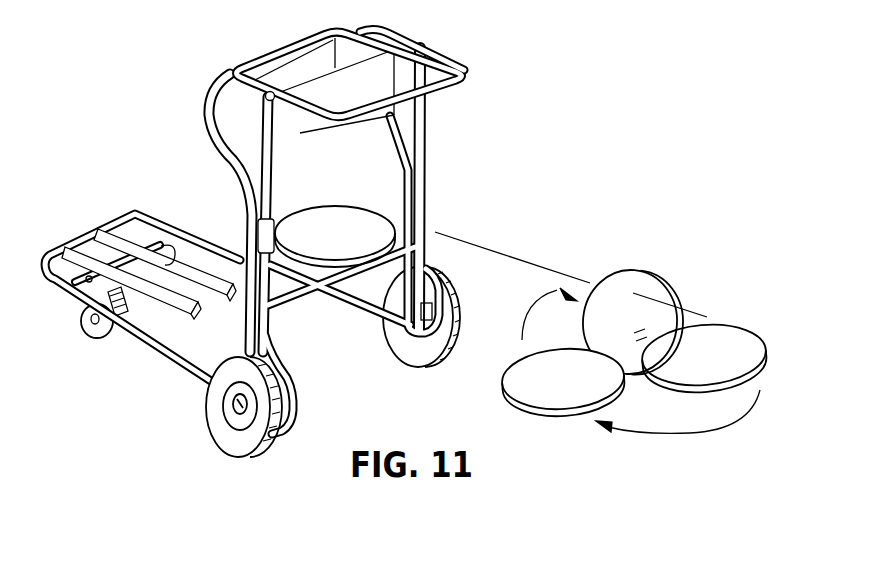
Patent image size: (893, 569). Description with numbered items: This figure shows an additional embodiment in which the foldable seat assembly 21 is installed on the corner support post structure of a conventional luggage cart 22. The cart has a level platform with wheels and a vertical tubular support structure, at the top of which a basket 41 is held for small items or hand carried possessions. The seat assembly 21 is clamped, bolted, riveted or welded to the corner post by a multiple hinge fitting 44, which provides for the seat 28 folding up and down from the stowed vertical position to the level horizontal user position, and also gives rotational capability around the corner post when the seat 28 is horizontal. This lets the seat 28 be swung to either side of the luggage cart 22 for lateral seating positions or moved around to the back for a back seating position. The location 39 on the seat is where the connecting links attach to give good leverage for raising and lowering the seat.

The foldable seat assembly 21 is at (380, 204).
The luggage cart 22 is at (228, 147).
The seat 28 is at (548, 417).
The location 39 is at (677, 301).
The container or basket 41 is at (240, 65).
The multiple hinge fitting 44 is at (246, 220).